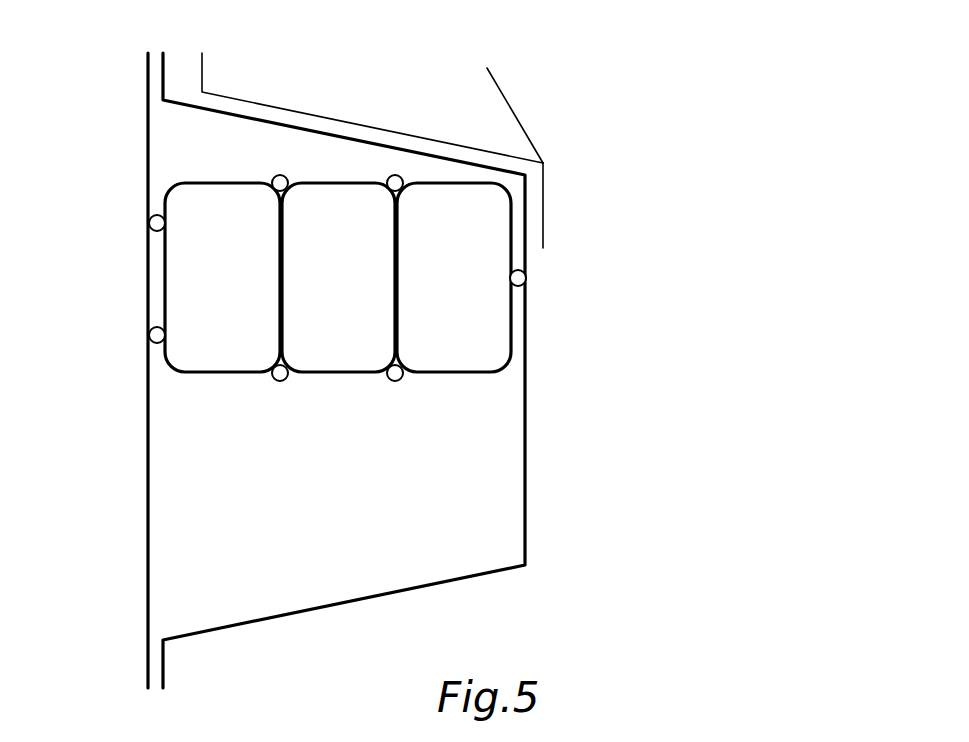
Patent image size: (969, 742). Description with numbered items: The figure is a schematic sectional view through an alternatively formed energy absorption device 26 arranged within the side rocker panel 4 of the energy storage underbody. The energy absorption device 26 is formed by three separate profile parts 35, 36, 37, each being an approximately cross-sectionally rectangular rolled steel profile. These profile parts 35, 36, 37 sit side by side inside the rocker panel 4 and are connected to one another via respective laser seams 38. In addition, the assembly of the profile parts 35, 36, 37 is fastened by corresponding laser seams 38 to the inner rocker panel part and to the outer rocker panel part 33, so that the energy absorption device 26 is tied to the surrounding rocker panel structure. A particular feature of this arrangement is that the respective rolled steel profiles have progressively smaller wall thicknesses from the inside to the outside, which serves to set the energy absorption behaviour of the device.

The side rocker panel 4 is at (575, 110).
The energy absorption device 26 is at (575, 234).
The outer rocker panel part 33 is at (527, 482).
The profile part 35 is at (222, 183).
The profile part 36 is at (147, 515).
The profile part 37 is at (438, 183).
The laser seam 38 is at (149, 223).